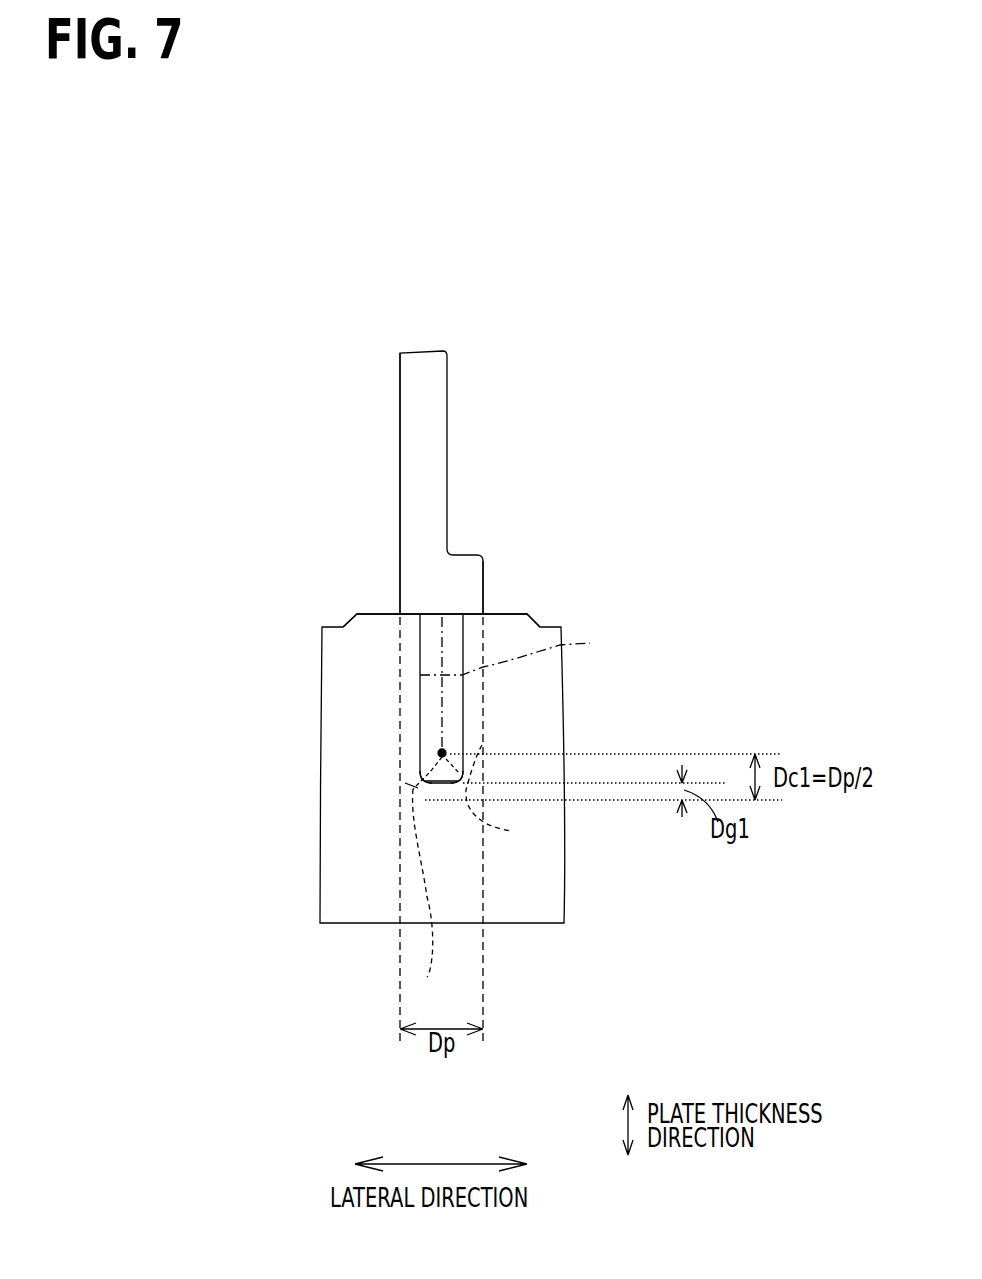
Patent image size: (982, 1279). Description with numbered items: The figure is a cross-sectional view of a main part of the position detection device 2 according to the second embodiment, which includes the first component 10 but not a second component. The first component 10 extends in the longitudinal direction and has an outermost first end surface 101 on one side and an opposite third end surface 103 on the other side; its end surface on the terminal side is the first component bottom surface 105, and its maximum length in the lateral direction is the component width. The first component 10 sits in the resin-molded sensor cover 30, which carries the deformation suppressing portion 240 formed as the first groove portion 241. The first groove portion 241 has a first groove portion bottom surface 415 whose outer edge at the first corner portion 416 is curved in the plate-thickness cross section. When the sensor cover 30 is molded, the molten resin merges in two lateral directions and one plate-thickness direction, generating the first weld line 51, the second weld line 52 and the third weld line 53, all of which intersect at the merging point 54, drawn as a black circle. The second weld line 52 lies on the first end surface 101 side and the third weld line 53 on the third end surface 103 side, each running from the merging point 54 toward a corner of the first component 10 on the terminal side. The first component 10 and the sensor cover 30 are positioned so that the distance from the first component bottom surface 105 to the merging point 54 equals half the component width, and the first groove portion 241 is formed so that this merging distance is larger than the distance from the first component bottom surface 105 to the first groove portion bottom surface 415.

The position detection device 2 is at (618, 367).
The first component 10 is at (447, 485).
The third end surface 103 is at (400, 545).
The first end surface 101 is at (483, 583).
The sensor cover 30 is at (538, 875).
The deformation suppressing portion 240 is at (420, 675).
The first groove portion 241 is at (500, 646).
The first groove portion bottom surface 415 is at (437, 775).
The first corner portion 416 is at (420, 783).
The first weld line 51 is at (519, 651).
The merging point 54 is at (442, 753).
The second weld line 52 is at (482, 753).
The third weld line 53 is at (417, 786).
The first component bottom surface 105 is at (425, 900).